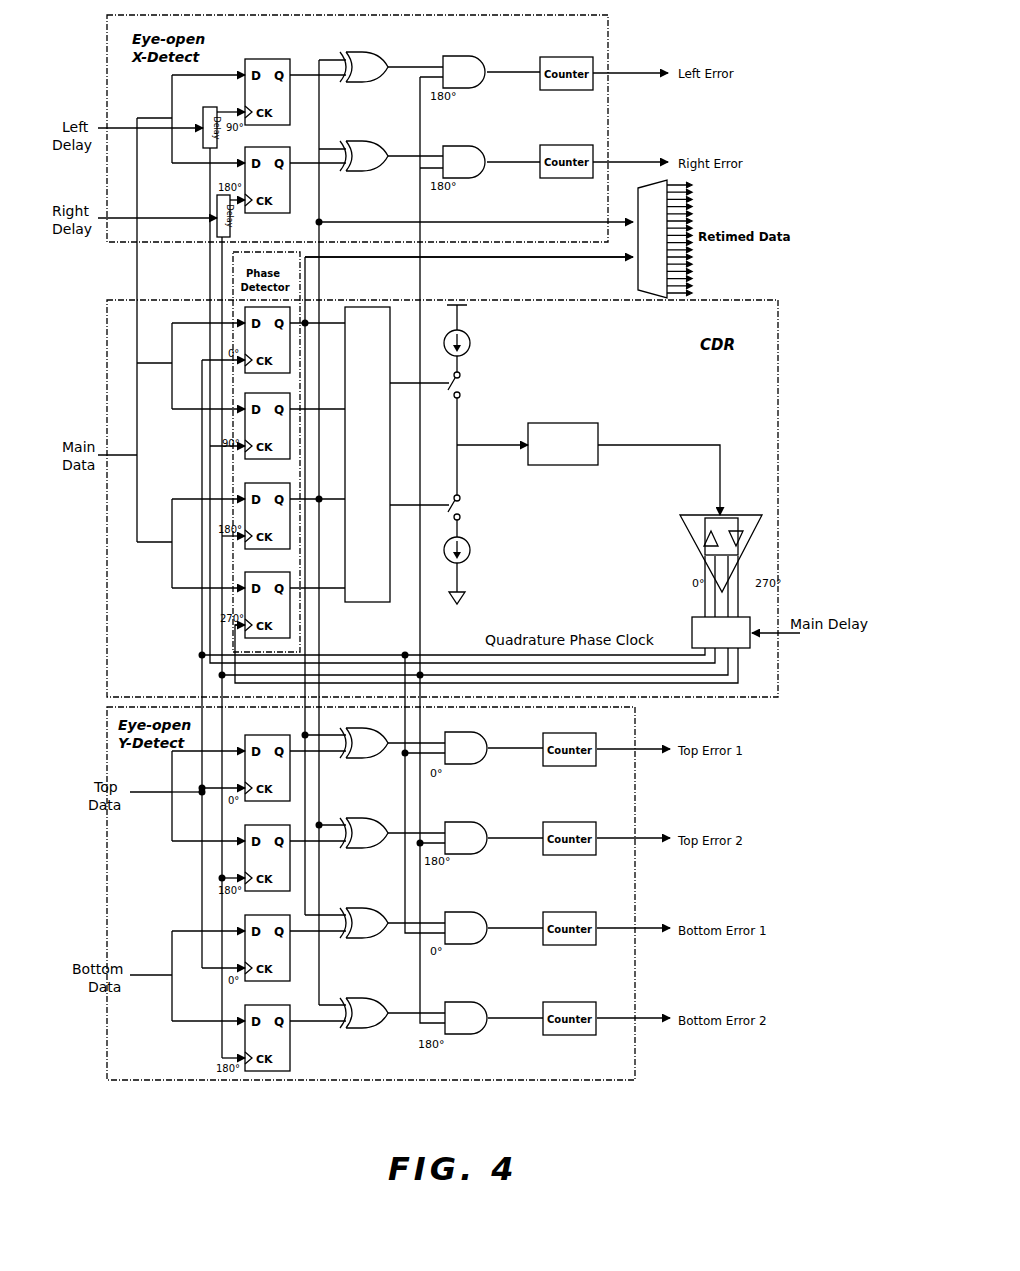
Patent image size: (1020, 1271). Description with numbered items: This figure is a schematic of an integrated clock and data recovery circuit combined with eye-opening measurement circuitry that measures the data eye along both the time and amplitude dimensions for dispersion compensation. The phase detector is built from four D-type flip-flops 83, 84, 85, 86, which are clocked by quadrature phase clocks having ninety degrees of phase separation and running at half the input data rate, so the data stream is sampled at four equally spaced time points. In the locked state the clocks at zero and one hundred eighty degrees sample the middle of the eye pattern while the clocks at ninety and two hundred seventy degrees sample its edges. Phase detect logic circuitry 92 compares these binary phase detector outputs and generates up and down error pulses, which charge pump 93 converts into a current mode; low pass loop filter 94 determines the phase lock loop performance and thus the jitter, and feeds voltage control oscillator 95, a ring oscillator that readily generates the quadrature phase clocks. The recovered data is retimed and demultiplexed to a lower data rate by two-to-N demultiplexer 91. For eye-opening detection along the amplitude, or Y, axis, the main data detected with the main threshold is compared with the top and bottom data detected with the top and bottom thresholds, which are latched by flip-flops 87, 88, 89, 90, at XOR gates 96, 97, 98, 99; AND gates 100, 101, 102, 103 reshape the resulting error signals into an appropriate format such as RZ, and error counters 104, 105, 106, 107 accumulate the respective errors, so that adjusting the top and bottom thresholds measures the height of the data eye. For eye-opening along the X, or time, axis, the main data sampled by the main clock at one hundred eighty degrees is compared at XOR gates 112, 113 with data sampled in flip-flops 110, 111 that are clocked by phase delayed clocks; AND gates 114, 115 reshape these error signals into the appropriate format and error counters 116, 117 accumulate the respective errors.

The D-type flip-flop 83 is at (267, 340).
The D-type flip-flop 84 is at (267, 426).
The D-type flip-flop 85 is at (267, 516).
The D-type flip-flop 86 is at (267, 605).
The top data flip-flop (0 degree) 87 is at (267, 768).
The top data flip-flop (180 degree) 88 is at (267, 858).
The bottom data flip-flop (0 degree) 89 is at (267, 948).
The bottom data flip-flop (180 degree) 90 is at (267, 1038).
The 2:N demultiplexer 91 is at (665, 239).
The phase detect logic circuitry 92 is at (367, 454).
The charge pump 93 is at (459, 454).
The low pass loop filter 94 is at (563, 434).
The voltage control oscillator 95 is at (721, 573).
The XOR gate 96 is at (364, 735).
The XOR gate 97 is at (364, 825).
The XOR gate 98 is at (364, 915).
The XOR gate 99 is at (364, 1005).
The AND gate 100 is at (466, 740).
The AND gate 101 is at (466, 830).
The AND gate 102 is at (466, 920).
The AND gate 103 is at (466, 1010).
The error counter 104 is at (569, 741).
The error counter 105 is at (569, 831).
The error counter 106 is at (569, 921).
The error counter 107 is at (569, 1011).
The left eye flip-flop 110 is at (267, 92).
The right eye flip-flop 111 is at (267, 180).
The XOR gate 112 is at (364, 59).
The XOR gate 113 is at (364, 148).
The AND gate 114 is at (464, 64).
The AND gate 115 is at (464, 154).
The error counter 116 is at (566, 65).
The error counter 117 is at (566, 154).